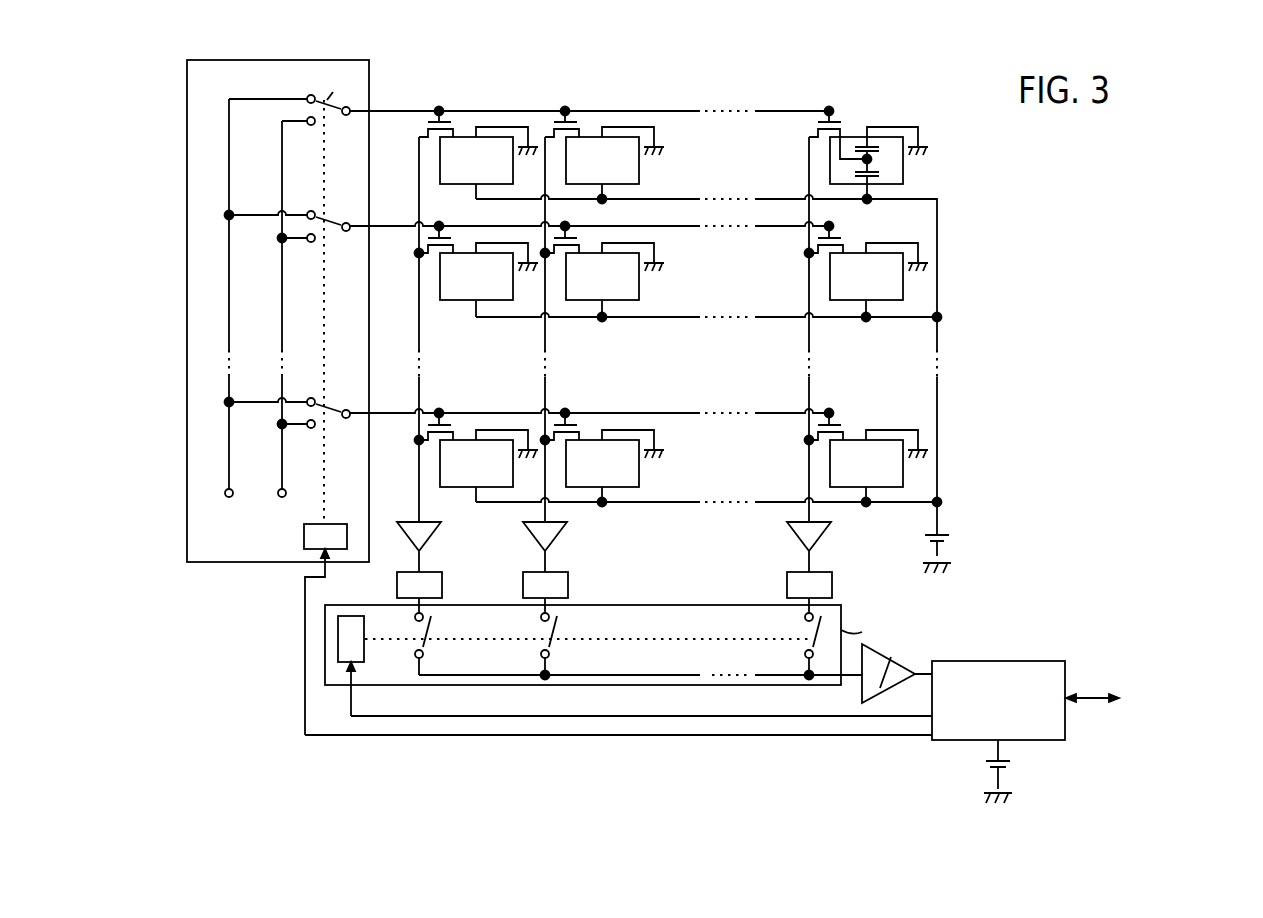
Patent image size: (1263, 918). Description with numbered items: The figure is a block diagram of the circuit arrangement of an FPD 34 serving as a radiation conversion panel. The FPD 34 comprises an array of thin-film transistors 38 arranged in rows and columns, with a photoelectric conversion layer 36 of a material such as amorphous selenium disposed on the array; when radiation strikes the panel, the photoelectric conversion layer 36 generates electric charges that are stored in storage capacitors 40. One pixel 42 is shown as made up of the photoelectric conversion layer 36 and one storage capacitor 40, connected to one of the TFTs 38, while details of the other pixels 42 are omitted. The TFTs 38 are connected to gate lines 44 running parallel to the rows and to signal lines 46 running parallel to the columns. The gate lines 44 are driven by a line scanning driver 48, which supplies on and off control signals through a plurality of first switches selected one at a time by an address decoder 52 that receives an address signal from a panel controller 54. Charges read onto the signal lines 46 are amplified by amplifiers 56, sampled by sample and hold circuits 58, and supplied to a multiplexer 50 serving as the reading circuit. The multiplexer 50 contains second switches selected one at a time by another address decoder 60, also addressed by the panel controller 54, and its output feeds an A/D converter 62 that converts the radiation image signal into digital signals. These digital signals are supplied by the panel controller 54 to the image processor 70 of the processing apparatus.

The FPD 34 is at (828, 80).
The photoelectric conversion layer 36 is at (882, 172).
The thin-film transistor 38 is at (817, 124).
The storage capacitor 40 is at (882, 147).
The pixel 42 is at (641, 178).
The gate line 44 is at (779, 110).
The signal line 46 is at (809, 160).
The line scanning driver 48 is at (187, 95).
The multiplexer 50 is at (705, 604).
The address decoder 52 is at (304, 538).
The panel controller 54 is at (1045, 661).
The amplifier 56 is at (560, 536).
The sample and hold circuit 58 is at (569, 587).
The address decoder 60 is at (364, 650).
The A/D converter 62 is at (903, 667).
The image processor 70 is at (1147, 698).